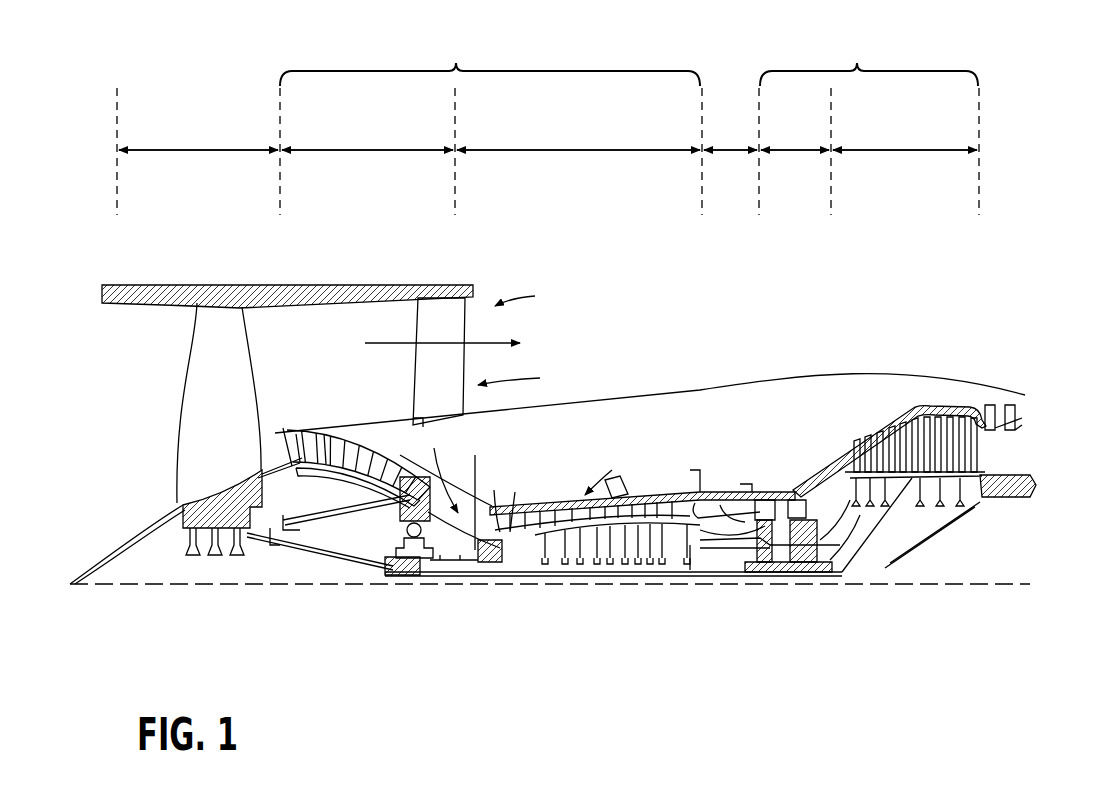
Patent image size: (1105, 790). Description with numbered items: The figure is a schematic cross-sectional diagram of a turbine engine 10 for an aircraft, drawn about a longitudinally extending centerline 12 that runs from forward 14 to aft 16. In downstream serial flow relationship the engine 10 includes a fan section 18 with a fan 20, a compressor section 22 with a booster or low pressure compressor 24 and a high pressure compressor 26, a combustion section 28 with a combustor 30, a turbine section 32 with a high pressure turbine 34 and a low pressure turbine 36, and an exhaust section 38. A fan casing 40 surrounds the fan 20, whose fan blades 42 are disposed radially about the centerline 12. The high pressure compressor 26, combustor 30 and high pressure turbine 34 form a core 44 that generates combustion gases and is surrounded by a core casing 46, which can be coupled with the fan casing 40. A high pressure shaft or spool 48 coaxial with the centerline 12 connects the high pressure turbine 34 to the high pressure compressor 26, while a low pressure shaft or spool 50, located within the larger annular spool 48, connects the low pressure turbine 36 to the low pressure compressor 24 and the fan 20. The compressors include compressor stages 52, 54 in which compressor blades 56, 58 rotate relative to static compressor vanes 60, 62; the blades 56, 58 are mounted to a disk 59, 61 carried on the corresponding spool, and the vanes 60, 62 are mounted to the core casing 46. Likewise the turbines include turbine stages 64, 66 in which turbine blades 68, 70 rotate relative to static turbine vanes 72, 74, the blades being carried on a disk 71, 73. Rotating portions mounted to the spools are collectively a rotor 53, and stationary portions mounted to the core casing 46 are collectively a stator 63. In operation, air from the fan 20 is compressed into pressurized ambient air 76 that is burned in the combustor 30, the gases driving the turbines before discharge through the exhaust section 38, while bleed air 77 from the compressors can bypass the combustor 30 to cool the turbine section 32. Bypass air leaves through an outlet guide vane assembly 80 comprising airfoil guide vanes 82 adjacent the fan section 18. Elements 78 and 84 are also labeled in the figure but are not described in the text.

The turbine engine 10 is at (718, 282).
The centerline 12 is at (197, 586).
The forward 14 is at (76, 394).
The aft 16 is at (1049, 463).
The fan section 18 is at (198, 139).
The fan 20 is at (147, 457).
The compressor section 22 is at (490, 63).
The low pressure compressor 24 is at (367, 139).
The high pressure compressor 26 is at (578, 139).
The combustion section 28 is at (730, 136).
The combustor 30 is at (730, 512).
The turbine section 32 is at (869, 63).
The high pressure turbine 34 is at (795, 139).
The low pressure turbine 36 is at (905, 139).
The exhaust section 38 is at (1036, 432).
The fan casing 40 is at (212, 290).
The fan blades 42 is at (243, 350).
The core 44 is at (684, 425).
The core casing 46 is at (935, 420).
The HP shaft or spool 48 is at (708, 548).
The LP shaft or spool 50 is at (400, 576).
The compressor stages 52 is at (272, 384).
The rotor 53 is at (358, 470).
The compressor stages 54 is at (548, 470).
The compressor blades 56 is at (325, 433).
The compressor blades 58 is at (515, 496).
The disk 59 is at (316, 468).
The compressor vanes 60 is at (298, 432).
The disk 61 is at (515, 560).
The compressor vanes 62 is at (494, 490).
The stator 63 is at (500, 562).
The turbine stages 64 is at (810, 447).
The turbine stages 66 is at (838, 383).
The turbine blades 68 is at (790, 518).
The turbine blades 70 is at (850, 470).
The disk 71 is at (775, 565).
The turbine vanes 72 is at (760, 510).
The disk 73 is at (860, 548).
The turbine vanes 74 is at (832, 470).
The pressurized ambient air 76 is at (441, 467).
The bleed air 77 is at (612, 470).
The bypass flow 78 is at (385, 340).
The outlet guide vane assembly 80 is at (523, 378).
The airfoil guide vanes 82 is at (425, 375).
The bypass flow path 84 is at (527, 294).